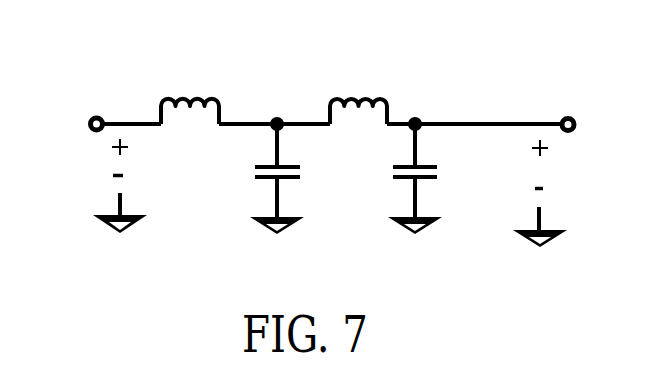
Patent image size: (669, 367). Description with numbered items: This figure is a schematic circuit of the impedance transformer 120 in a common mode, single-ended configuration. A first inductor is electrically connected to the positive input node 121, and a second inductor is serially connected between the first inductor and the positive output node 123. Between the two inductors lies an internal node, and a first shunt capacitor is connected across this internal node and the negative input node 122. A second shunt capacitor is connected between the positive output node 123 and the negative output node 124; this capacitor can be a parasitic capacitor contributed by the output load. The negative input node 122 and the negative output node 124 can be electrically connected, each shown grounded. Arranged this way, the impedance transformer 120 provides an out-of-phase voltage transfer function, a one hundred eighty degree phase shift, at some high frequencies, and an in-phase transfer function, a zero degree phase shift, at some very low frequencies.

The impedance transformer 120 is at (314, 129).
The positive input node 121 is at (74, 123).
The negative input node 122 is at (140, 214).
The positive output node 123 is at (594, 126).
The negative output node 124 is at (555, 222).